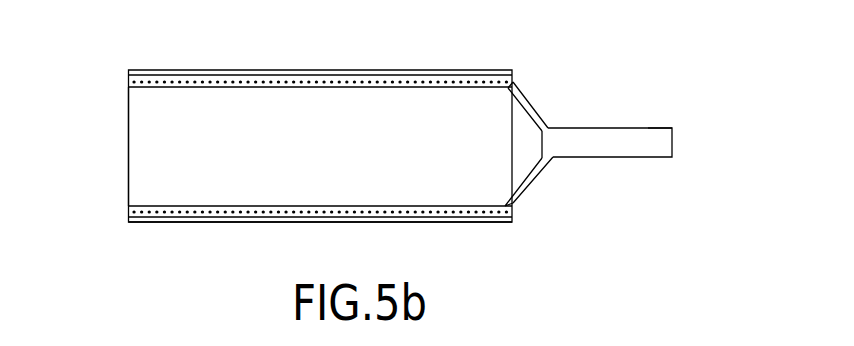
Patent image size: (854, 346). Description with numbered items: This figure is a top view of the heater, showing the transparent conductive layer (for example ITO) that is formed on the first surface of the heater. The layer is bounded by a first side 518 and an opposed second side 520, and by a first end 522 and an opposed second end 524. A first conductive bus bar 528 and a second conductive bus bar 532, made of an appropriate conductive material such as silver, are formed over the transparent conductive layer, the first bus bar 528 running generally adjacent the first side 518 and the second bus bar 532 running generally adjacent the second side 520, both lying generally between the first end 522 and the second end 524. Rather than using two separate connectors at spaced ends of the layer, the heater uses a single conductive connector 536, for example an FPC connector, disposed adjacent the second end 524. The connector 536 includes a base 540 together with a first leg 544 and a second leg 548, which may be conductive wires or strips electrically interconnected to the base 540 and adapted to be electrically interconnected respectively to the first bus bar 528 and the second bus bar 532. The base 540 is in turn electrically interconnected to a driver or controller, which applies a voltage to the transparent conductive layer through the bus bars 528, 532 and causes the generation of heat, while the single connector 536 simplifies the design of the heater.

The first side 518 is at (197, 70).
The second side 520 is at (195, 222).
The first end 522 is at (128, 145).
The first conductive bus bar 528 is at (128, 84).
The second conductive bus bar 532 is at (128, 212).
The second end 524 is at (515, 129).
The first leg 544 is at (532, 98).
The second leg 548 is at (528, 188).
The base 540 is at (610, 127).
The conductive connector 536 is at (666, 119).